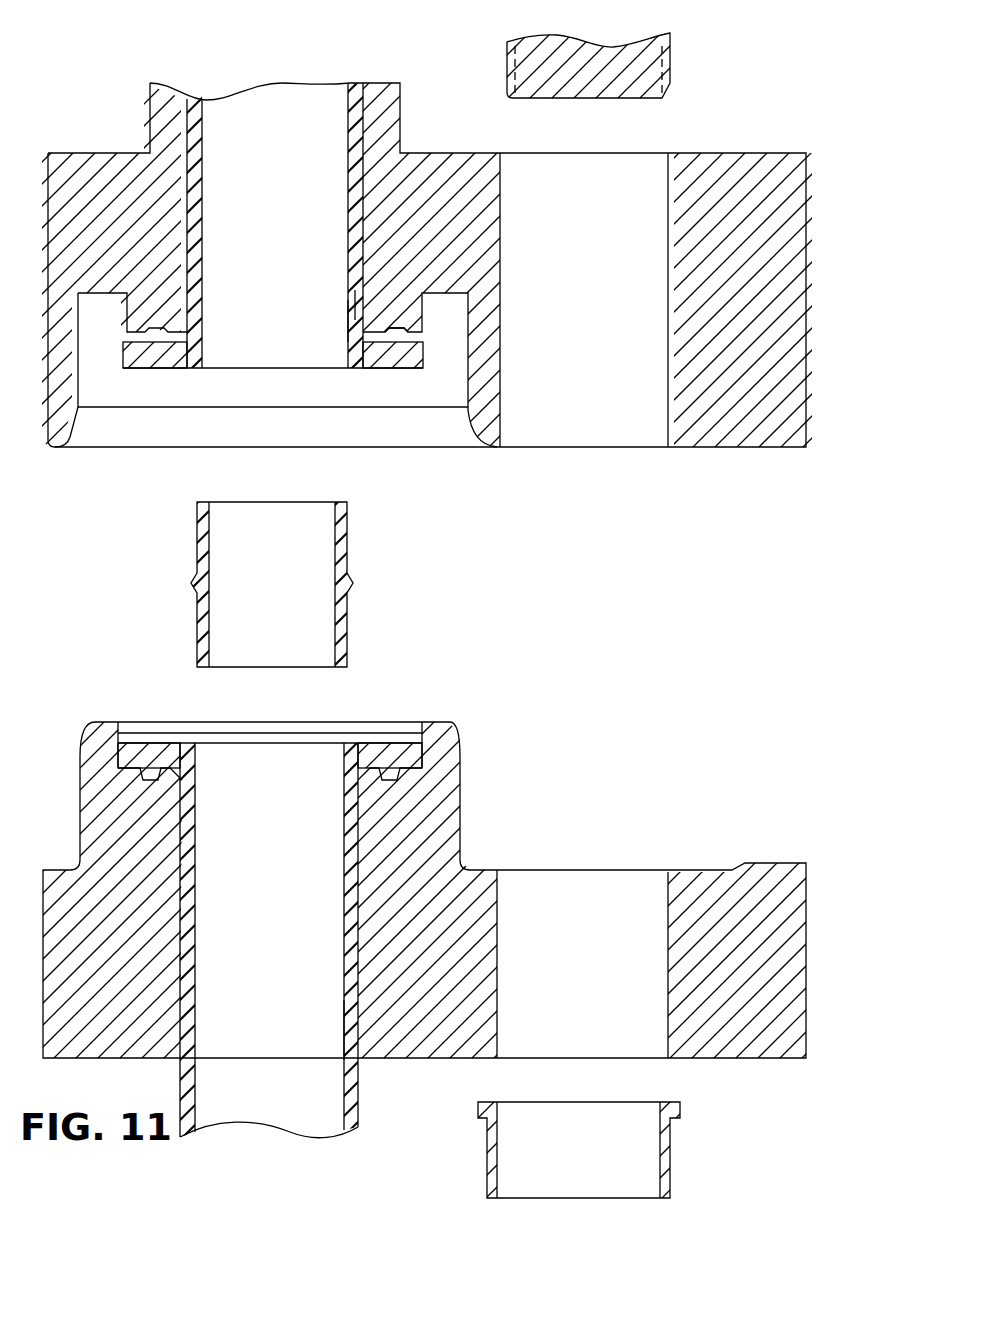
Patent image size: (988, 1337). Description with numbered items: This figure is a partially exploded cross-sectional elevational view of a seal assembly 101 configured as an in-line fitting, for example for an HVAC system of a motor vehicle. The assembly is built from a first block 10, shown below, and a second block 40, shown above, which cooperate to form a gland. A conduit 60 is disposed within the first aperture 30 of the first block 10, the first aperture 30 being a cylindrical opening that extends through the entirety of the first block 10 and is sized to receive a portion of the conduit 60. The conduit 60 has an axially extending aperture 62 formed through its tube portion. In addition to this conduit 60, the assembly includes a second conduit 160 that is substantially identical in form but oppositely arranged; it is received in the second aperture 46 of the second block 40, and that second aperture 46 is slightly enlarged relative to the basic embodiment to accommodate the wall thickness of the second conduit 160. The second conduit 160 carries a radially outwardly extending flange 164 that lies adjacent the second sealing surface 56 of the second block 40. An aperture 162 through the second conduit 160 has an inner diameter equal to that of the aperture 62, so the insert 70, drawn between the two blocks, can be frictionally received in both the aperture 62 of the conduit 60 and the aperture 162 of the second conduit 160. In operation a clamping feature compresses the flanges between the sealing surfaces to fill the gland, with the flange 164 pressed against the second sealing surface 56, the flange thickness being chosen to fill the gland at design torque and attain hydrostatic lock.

The first block 10 is at (494, 668).
The first aperture 30 is at (340, 987).
The second block 40 is at (540, 467).
The second aperture 46 is at (348, 238).
The second sealing surface 56 is at (392, 333).
The conduit 60 is at (350, 1015).
The aperture 62 is at (342, 1057).
The insert 70 is at (185, 570).
The seal assembly 101 is at (494, 668).
The second conduit 160 is at (357, 307).
The aperture 162 is at (348, 332).
The flange 164 is at (373, 360).